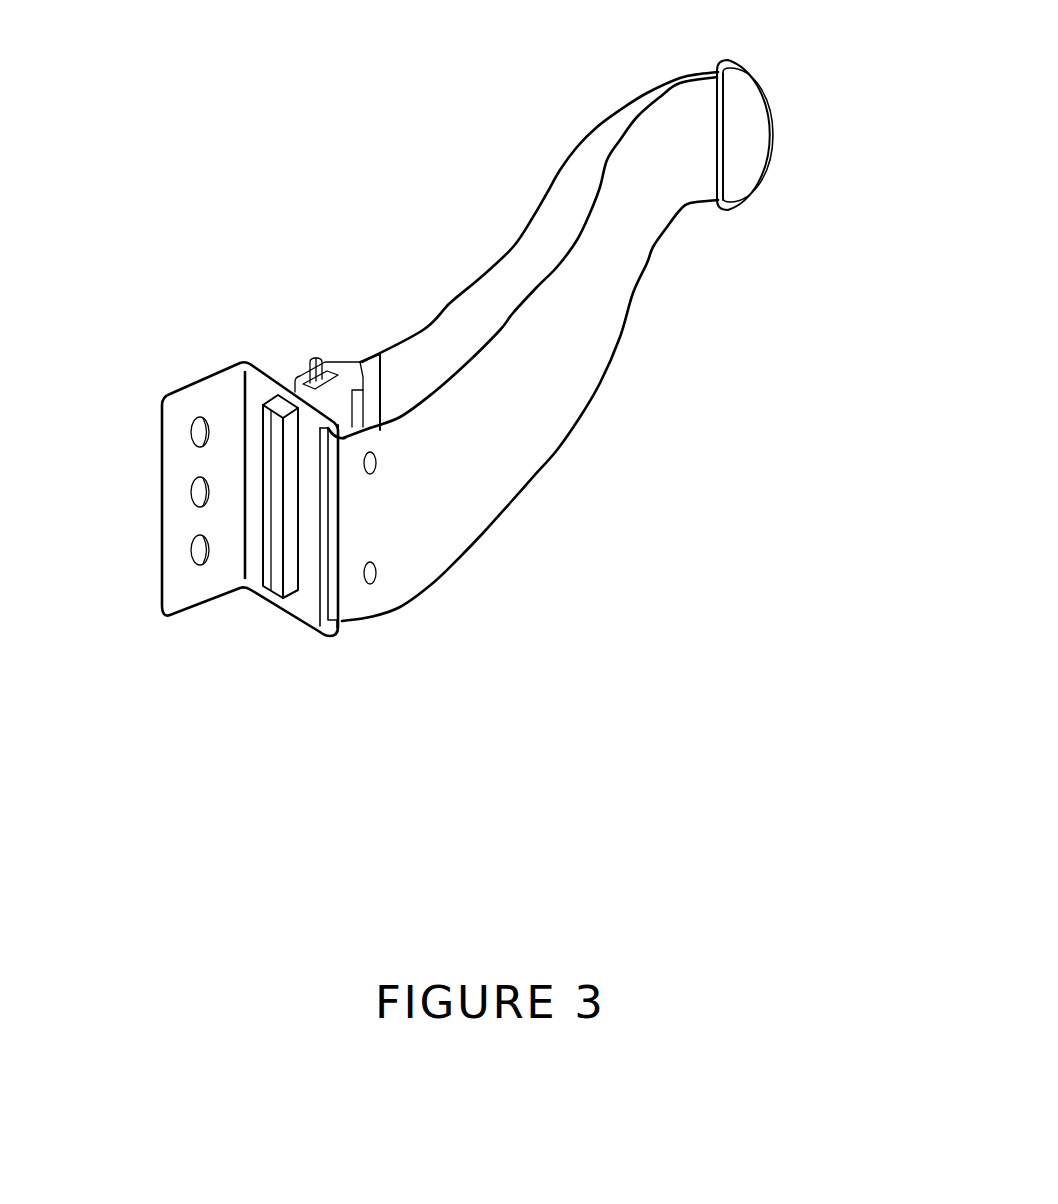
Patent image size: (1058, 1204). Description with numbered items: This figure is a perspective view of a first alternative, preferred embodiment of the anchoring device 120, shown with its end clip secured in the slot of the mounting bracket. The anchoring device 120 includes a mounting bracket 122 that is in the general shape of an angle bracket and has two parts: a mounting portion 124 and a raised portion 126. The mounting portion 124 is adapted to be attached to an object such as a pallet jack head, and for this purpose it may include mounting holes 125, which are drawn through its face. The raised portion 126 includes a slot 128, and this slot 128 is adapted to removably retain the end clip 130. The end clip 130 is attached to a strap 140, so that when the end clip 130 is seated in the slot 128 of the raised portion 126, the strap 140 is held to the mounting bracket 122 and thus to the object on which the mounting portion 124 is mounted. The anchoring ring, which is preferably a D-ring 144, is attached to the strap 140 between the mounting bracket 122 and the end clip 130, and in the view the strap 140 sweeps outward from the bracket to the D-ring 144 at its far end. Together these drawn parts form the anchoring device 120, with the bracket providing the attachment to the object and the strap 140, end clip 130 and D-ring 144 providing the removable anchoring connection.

The anchoring device 120 is at (463, 217).
The mounting bracket 122 is at (198, 352).
The mounting portion 124 is at (177, 522).
The mounting holes 125 is at (193, 560).
The raised portion 126 is at (302, 607).
The slot 128 is at (300, 490).
The end clip 130 is at (345, 385).
The strap 140 is at (560, 398).
The D-ring 144 is at (753, 202).